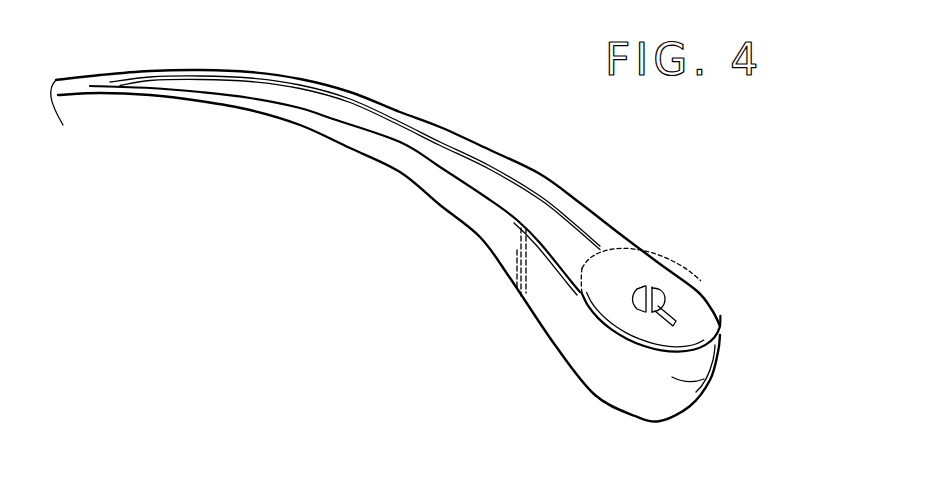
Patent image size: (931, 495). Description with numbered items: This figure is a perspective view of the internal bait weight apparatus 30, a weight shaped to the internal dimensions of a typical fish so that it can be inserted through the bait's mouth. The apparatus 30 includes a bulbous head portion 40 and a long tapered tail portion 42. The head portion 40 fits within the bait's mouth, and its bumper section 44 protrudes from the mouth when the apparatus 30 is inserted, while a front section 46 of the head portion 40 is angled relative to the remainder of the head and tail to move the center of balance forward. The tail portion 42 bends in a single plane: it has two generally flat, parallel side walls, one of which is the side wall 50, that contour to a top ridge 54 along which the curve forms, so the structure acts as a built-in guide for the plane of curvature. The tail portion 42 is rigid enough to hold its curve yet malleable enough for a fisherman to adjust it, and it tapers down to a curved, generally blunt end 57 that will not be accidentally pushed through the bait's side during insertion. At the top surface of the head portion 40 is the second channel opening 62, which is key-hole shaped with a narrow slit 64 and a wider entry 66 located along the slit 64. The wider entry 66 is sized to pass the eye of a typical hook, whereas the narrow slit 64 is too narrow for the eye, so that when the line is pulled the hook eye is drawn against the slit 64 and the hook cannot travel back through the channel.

The internal bait weight apparatus 30 is at (434, 71).
The bulbous head portion 40 is at (582, 381).
The tail portion 42 is at (270, 141).
The bumper section 44 is at (717, 347).
The front section 46 is at (690, 291).
The side wall 50 is at (404, 171).
The top ridge 54 is at (430, 138).
The blunt end 57 is at (72, 118).
The second channel opening 62 is at (646, 283).
The narrow slit 64 is at (677, 317).
The wider entry 66 is at (658, 292).